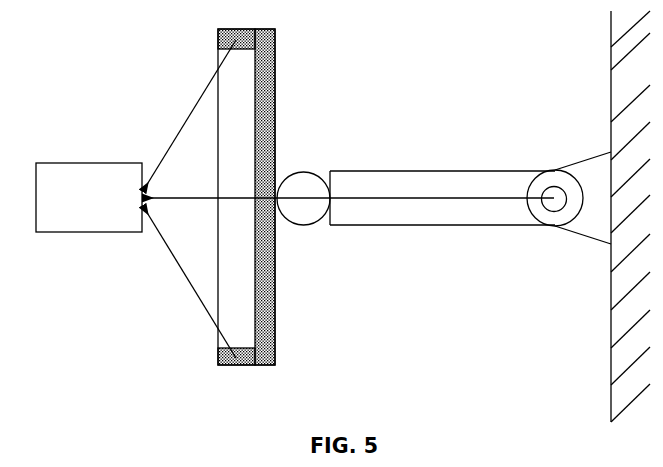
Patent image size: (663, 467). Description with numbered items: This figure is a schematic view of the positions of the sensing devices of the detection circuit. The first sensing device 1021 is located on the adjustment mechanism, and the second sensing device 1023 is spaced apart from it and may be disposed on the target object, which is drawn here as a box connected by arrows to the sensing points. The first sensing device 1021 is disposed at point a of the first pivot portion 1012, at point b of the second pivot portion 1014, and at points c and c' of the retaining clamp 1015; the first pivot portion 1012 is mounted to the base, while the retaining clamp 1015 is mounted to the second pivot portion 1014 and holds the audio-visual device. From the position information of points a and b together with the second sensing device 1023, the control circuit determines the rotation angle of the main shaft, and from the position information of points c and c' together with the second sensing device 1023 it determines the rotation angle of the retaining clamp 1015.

The first pivot portion 1012 is at (553, 227).
The second pivot portion 1014 is at (303, 170).
The retaining clamp 1015 is at (276, 93).
The first sensing device 1021 is at (548, 190).
The second sensing device 1023 is at (70, 163).